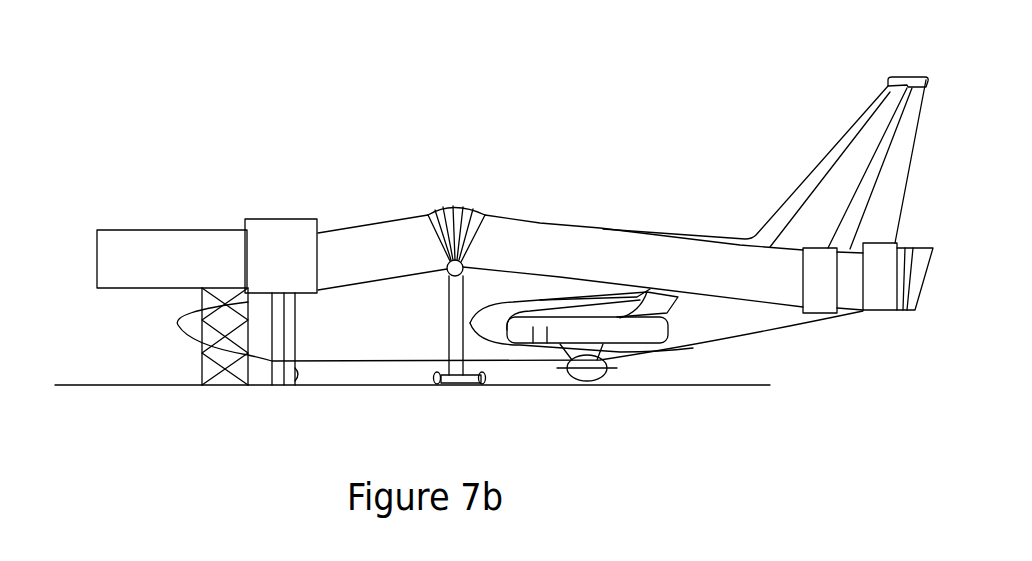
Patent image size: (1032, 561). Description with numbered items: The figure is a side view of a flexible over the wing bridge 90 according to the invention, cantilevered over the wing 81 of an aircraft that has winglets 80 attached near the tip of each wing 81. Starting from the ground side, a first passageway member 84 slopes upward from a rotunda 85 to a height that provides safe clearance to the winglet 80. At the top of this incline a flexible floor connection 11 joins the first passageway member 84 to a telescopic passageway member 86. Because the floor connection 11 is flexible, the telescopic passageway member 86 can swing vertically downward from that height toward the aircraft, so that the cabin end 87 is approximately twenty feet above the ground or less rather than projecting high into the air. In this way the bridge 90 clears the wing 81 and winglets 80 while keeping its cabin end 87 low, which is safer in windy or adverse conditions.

The flexible over the wing bridge 90 is at (456, 143).
The rotunda 85 is at (280, 219).
The first passageway member 84 is at (385, 214).
The flexible floor connection 11 is at (483, 246).
The telescopic passageway member 86 is at (603, 229).
The cabin end 87 is at (887, 242).
The winglet 80 is at (507, 331).
The wing 81 is at (682, 300).